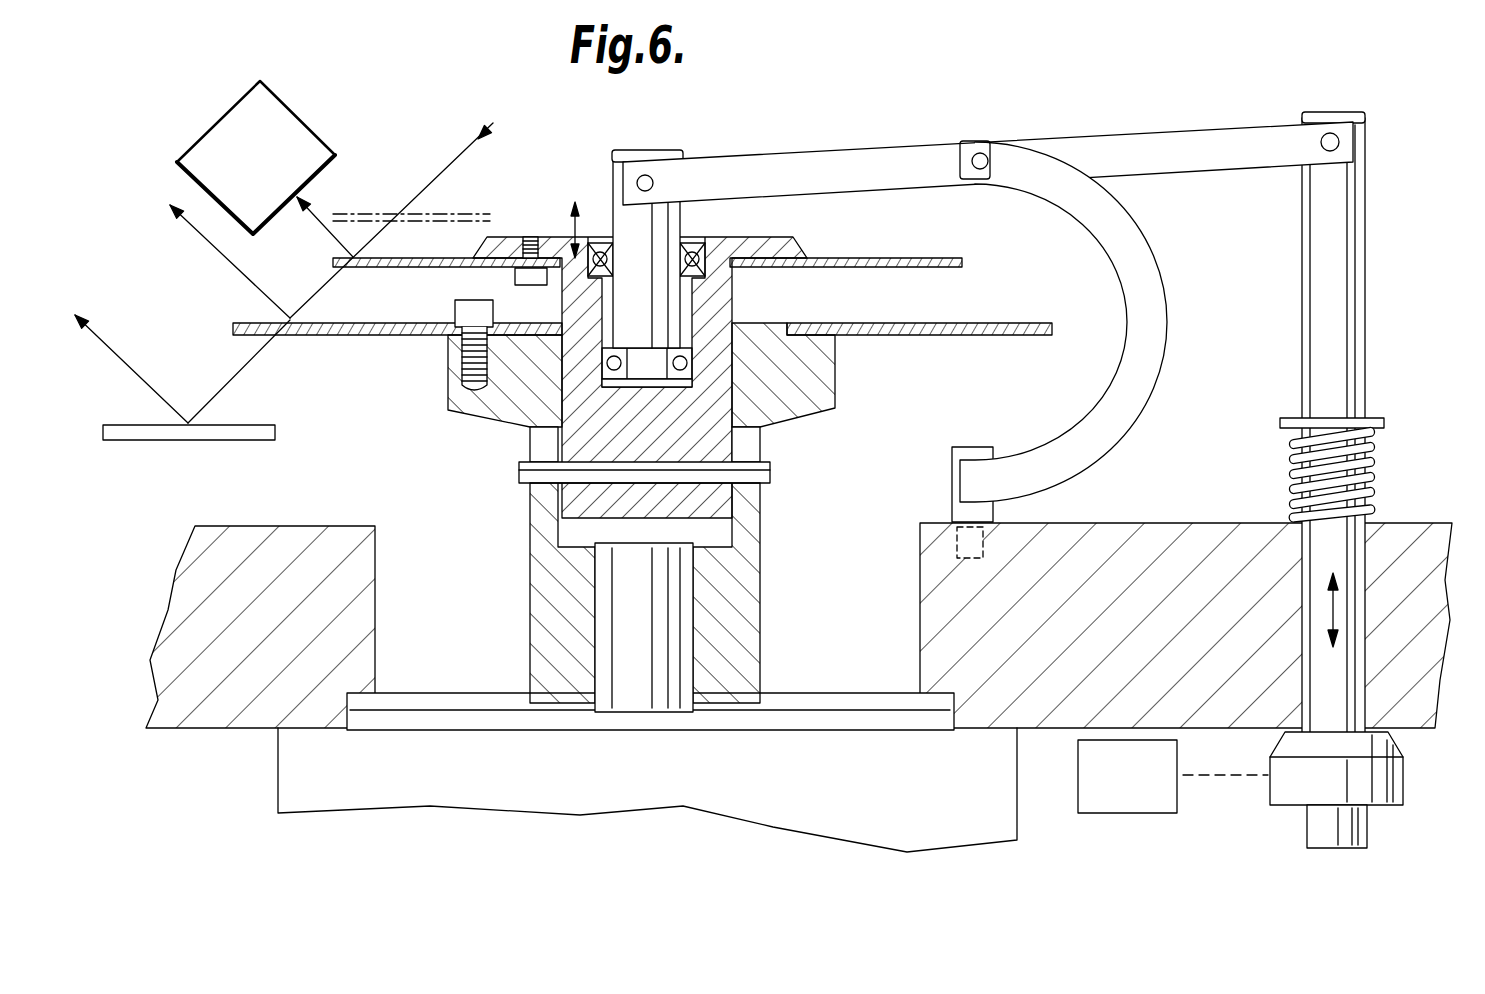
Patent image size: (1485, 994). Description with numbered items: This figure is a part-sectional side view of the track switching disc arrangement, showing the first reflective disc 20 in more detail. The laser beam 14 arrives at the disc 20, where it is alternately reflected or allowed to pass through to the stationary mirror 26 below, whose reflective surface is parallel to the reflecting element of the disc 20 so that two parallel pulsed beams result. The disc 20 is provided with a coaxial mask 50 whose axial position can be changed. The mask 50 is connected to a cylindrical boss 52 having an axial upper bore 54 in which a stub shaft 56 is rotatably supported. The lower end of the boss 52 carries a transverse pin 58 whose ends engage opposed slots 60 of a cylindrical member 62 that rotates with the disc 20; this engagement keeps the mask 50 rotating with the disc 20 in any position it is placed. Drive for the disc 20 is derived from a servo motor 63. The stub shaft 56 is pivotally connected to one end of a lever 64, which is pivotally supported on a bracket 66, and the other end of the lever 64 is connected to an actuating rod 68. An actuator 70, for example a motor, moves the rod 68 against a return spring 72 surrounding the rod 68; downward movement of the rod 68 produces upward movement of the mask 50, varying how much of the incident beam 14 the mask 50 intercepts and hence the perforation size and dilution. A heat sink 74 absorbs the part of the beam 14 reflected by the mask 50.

The laser beam 14 is at (457, 162).
The first reflective disc 20 is at (960, 332).
The stationary mirror 26 is at (262, 430).
The mask 50 is at (889, 268).
The cylindrical boss 52 is at (715, 435).
The axial upper bore 54 is at (695, 292).
The stub shaft 56 is at (622, 213).
The transverse pin 58 is at (543, 474).
The slots 60 is at (527, 448).
The cylindrical member 62 is at (742, 603).
The servo motor 63 is at (832, 789).
The lever 64 is at (832, 156).
The bracket 66 is at (1140, 380).
The actuating rod 68 is at (1350, 292).
The actuator 70 is at (1147, 793).
The return spring 72 is at (1365, 468).
The heat sink 74 is at (293, 128).